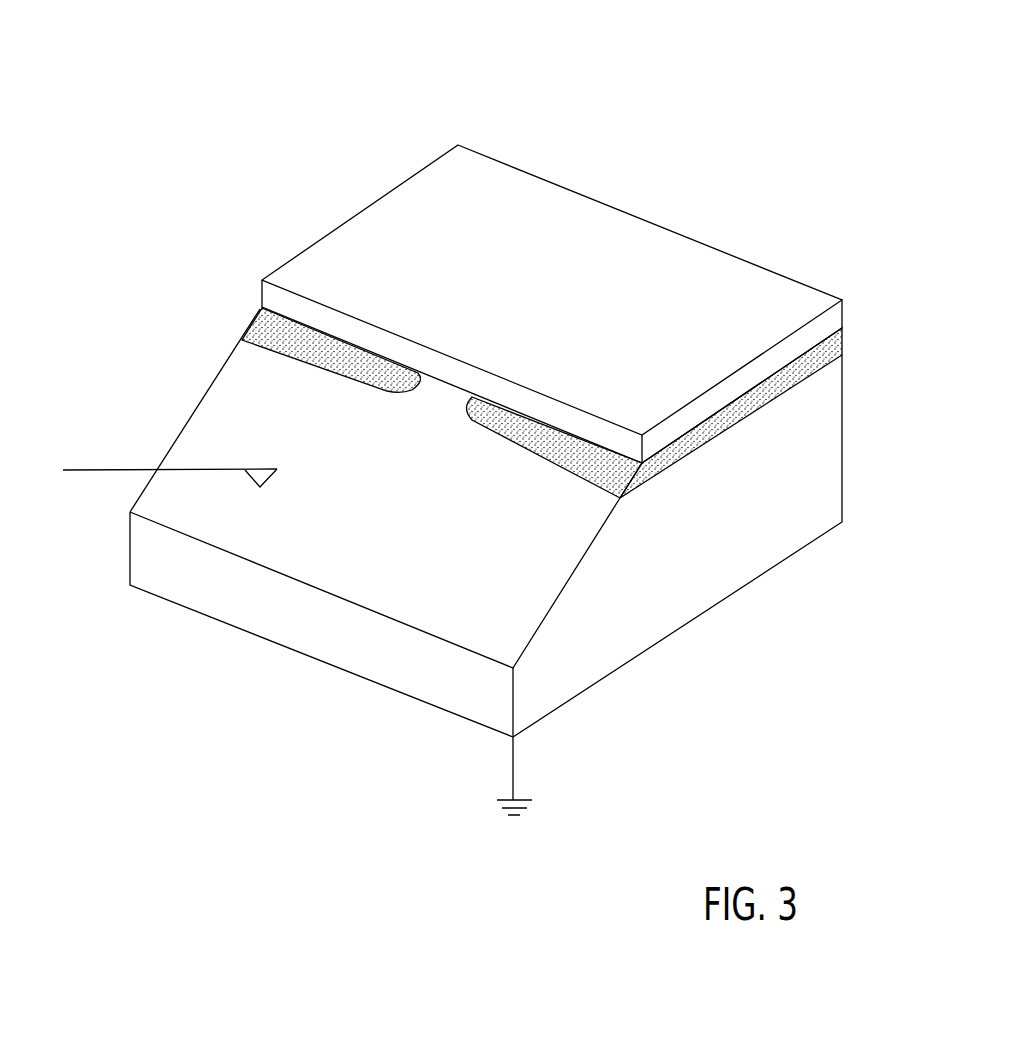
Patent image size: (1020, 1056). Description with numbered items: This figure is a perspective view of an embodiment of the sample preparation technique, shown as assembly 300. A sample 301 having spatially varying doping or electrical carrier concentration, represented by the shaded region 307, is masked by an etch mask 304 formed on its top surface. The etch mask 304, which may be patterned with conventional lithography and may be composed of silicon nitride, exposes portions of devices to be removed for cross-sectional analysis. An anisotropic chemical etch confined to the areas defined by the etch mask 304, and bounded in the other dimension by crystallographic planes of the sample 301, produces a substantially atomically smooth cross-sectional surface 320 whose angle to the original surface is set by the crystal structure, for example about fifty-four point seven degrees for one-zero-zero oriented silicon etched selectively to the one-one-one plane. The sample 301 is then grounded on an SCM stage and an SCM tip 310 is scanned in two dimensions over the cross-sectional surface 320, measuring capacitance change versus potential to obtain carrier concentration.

The stage assembly 300 is at (437, 69).
The sample 301 is at (698, 576).
The etch mask 304 is at (833, 318).
The shaded region 307 is at (273, 333).
The SCM tip 310 is at (107, 469).
The cross-sectional surface 320 is at (310, 433).